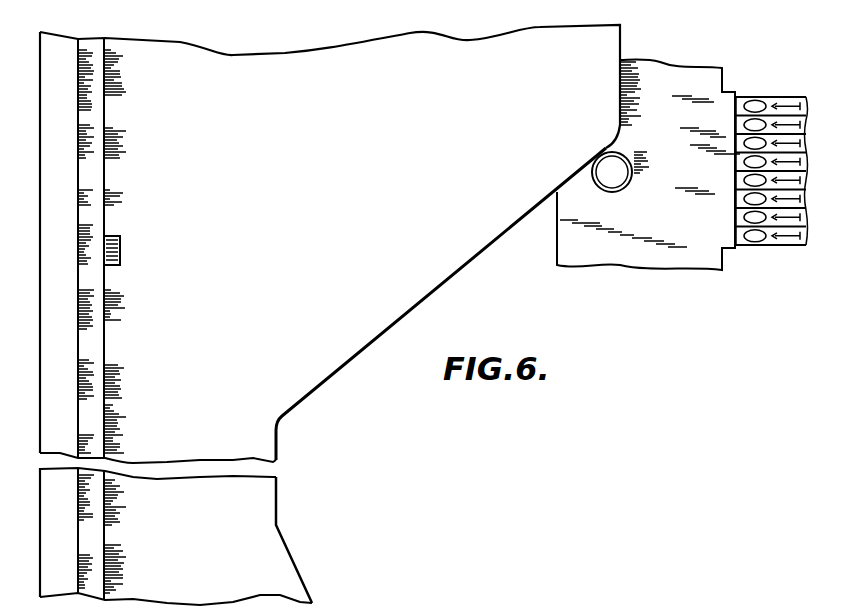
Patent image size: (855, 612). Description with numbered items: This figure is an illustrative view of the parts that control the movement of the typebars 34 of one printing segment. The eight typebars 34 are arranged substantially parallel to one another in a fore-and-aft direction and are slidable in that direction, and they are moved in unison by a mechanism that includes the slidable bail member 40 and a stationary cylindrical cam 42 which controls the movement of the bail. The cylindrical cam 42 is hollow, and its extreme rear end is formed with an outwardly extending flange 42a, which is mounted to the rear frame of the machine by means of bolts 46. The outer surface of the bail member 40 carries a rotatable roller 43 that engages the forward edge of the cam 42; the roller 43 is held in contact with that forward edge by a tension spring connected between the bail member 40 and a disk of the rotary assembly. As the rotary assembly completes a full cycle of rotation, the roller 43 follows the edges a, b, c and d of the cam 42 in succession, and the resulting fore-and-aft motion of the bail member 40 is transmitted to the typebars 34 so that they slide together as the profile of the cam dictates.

The typebars 34 is at (778, 123).
The slidable bail member 40 is at (620, 255).
The stationary cylindrical cam 42 is at (610, 38).
The outwardly extending flange 42a is at (97, 178).
The rotatable roller 43 is at (630, 186).
The bolts 46 is at (122, 250).
The cam edge a is at (622, 100).
The cam edge b is at (440, 287).
The cam edge c is at (278, 456).
The cam edge d is at (297, 567).